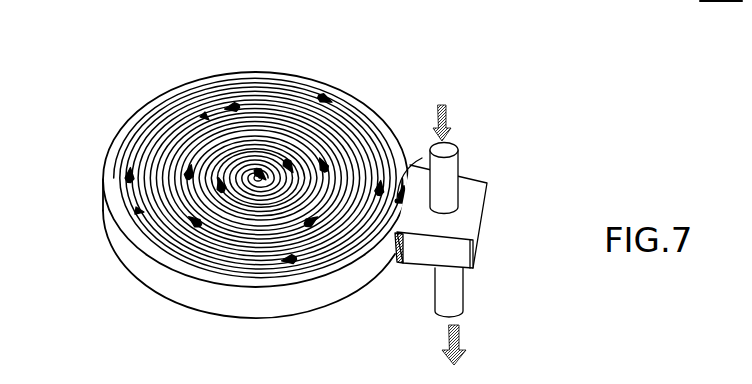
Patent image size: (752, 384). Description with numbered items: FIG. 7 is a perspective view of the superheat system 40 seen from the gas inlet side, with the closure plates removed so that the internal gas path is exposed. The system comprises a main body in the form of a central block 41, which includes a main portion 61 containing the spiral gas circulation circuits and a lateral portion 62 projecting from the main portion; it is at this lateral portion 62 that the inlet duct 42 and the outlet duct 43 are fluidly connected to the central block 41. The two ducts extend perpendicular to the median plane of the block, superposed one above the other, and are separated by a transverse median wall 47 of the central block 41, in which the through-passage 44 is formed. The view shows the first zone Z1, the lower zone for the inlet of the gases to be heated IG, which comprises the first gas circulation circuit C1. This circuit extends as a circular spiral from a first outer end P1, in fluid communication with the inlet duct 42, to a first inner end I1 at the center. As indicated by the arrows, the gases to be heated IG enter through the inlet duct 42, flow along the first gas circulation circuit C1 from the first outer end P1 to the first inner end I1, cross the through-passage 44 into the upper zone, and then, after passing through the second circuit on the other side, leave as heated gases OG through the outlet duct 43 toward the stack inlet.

The superheat system 40 is at (340, 60).
The central block 41 is at (117, 168).
The inlet duct 42 is at (449, 170).
The outlet duct 43 is at (454, 290).
The through-passage 44 is at (257, 178).
The transverse median wall 47 is at (357, 182).
The main portion 61 is at (305, 73).
The lateral portion 62 is at (470, 201).
The first gas circulation circuit C1 is at (206, 117).
The first zone Z1 is at (140, 211).
The first inner end I1 is at (261, 176).
The first outer end P1 is at (410, 190).
The gases to be heated IG is at (445, 110).
The heated gases OG is at (461, 347).